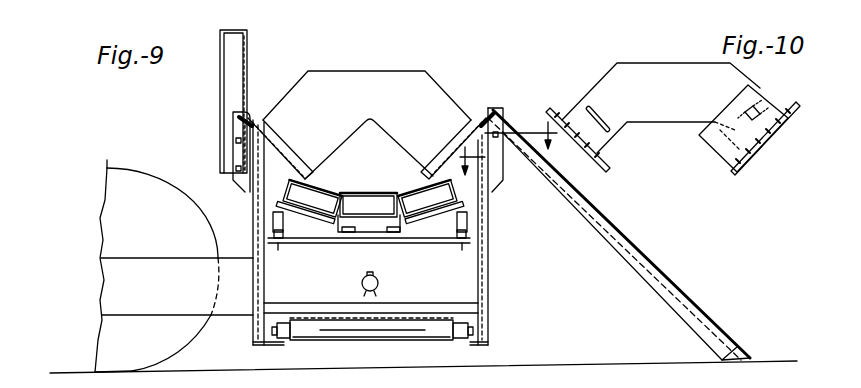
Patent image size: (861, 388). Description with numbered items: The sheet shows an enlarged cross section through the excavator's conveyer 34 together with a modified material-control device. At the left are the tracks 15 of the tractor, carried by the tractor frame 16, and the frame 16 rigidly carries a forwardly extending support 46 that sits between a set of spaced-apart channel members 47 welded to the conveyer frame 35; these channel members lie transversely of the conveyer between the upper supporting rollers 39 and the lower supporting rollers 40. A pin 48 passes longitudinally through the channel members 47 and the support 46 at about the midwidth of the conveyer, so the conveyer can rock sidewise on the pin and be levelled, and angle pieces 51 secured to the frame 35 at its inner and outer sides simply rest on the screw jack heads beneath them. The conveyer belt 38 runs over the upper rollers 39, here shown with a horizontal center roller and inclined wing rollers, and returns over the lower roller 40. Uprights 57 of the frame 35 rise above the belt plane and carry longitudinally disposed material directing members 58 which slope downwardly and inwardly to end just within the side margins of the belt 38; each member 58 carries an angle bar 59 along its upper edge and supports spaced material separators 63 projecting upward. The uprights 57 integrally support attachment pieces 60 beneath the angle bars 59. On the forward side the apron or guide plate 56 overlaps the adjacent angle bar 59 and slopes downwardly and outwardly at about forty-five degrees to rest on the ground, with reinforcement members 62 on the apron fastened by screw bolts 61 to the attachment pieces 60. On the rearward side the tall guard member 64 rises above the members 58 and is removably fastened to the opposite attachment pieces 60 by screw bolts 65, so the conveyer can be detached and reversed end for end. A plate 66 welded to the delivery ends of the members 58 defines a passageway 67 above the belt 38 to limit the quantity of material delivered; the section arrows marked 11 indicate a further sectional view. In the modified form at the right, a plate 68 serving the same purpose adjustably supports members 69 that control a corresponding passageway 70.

In FIG. 9, the section line 11 is at (514, 157).
In FIG. 9, the tracks 15 is at (142, 171).
In FIG. 9, the frame 16 is at (118, 340).
In FIG. 9, the conveyer 34 is at (498, 225).
In FIG. 9, the frame 35 is at (488, 327).
In FIG. 9, the conveyer belt 38 is at (372, 192).
In FIG. 9, the upper supporting rollers 39 is at (328, 192).
In FIG. 9, the lower supporting rollers 40 is at (341, 341).
In FIG. 9, the supports 46 is at (122, 282).
In FIG. 9, the channel members 47 is at (465, 288).
In FIG. 9, the pin 48 is at (379, 283).
In FIG. 9, the angle pieces 51 is at (273, 248).
In FIG. 9, the apron or guide plate 56 is at (622, 238).
In FIG. 9, the uprights 57 is at (252, 330).
In FIG. 9, the material directing members 58 is at (282, 148).
In FIG. 9, the angle bar 59 is at (250, 118).
In FIG. 9, the attachment pieces 60 is at (238, 181).
In FIG. 9, the screw bolts 61 is at (499, 140).
In FIG. 9, the reinforcement members 62 is at (640, 268).
In FIG. 9, the material separators 63 is at (300, 162).
In FIG. 9, the guard member 64 is at (248, 63).
In FIG. 9, the screw bolts 65 is at (236, 168).
In FIG. 9, the plate 66 is at (430, 85).
In FIG. 9, the passageway 67 is at (384, 146).
In FIG. 10, the plate 68 is at (660, 66).
In FIG. 10, the members 69 is at (732, 151).
In FIG. 10, the passageway 70 is at (666, 128).